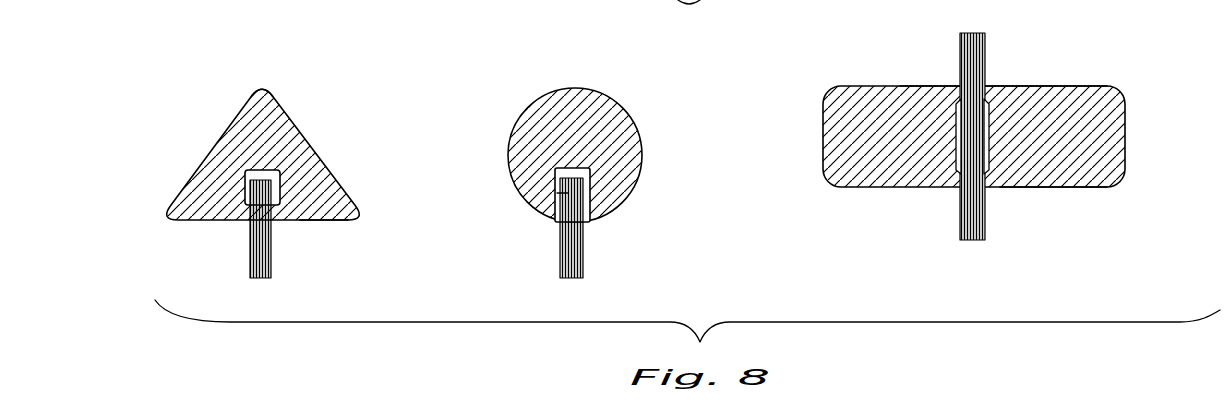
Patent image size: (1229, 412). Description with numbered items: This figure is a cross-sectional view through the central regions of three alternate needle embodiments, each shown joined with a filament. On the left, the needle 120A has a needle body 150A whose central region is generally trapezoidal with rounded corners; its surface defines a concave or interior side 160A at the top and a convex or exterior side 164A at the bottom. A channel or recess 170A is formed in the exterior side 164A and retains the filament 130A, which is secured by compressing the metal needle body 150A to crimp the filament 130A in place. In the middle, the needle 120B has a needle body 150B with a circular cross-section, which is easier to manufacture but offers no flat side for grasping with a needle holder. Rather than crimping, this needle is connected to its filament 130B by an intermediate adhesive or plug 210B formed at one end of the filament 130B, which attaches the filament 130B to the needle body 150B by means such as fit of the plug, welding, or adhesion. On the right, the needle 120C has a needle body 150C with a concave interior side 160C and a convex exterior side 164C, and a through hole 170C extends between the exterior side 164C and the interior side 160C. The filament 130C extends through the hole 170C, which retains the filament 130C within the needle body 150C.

The needle 120A is at (183, 134).
The needle body 150A is at (220, 125).
The interior side 160A is at (263, 86).
The exterior side 164A is at (333, 221).
The recess 170A is at (240, 230).
The filament 130A is at (280, 250).
The needle 120B is at (518, 84).
The needle body 150B is at (507, 151).
The adhesive / bond region 210B is at (557, 193).
The filament 130B is at (603, 236).
The needle 120C is at (813, 85).
The needle body 150C is at (822, 136).
The interior side 160C is at (1083, 87).
The exterior side 164C is at (1058, 188).
The filament 130C is at (993, 53).
The through hole 170C is at (945, 194).